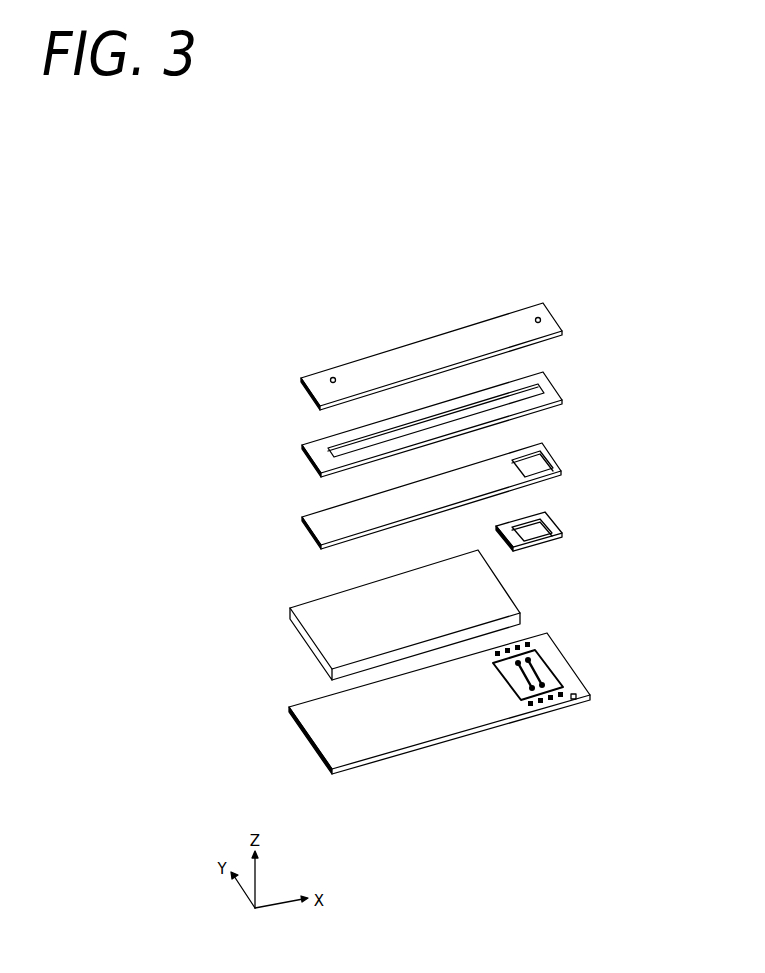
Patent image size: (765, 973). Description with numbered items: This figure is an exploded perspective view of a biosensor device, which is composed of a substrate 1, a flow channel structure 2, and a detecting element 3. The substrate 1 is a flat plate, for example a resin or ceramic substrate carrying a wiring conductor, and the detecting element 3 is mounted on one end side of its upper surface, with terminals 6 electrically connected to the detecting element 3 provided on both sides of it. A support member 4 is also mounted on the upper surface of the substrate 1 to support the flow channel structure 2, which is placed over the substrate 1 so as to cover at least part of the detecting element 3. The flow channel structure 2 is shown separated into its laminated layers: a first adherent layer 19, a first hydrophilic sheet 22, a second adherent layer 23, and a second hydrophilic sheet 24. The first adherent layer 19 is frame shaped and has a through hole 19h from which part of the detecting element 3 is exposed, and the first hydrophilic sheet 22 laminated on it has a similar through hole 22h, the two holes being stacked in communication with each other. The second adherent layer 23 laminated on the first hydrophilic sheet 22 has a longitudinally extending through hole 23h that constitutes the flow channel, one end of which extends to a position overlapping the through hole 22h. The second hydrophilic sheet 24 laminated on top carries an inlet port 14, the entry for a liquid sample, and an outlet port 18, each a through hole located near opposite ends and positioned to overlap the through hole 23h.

The substrate 1 is at (565, 672).
The flow channel structure 2 is at (637, 290).
The detecting element 3 is at (540, 663).
The support member 4 is at (493, 592).
The terminals 6 is at (583, 701).
The inlet port 14 is at (334, 377).
The outlet port 18 is at (537, 317).
The first adherent layer 19 is at (561, 528).
The through hole 19h is at (528, 525).
The first hydrophilic sheet 22 is at (559, 459).
The through hole 22h is at (531, 456).
The second adherent layer 23 is at (552, 387).
The through hole 23h is at (442, 417).
The second hydrophilic sheet 24 is at (553, 309).